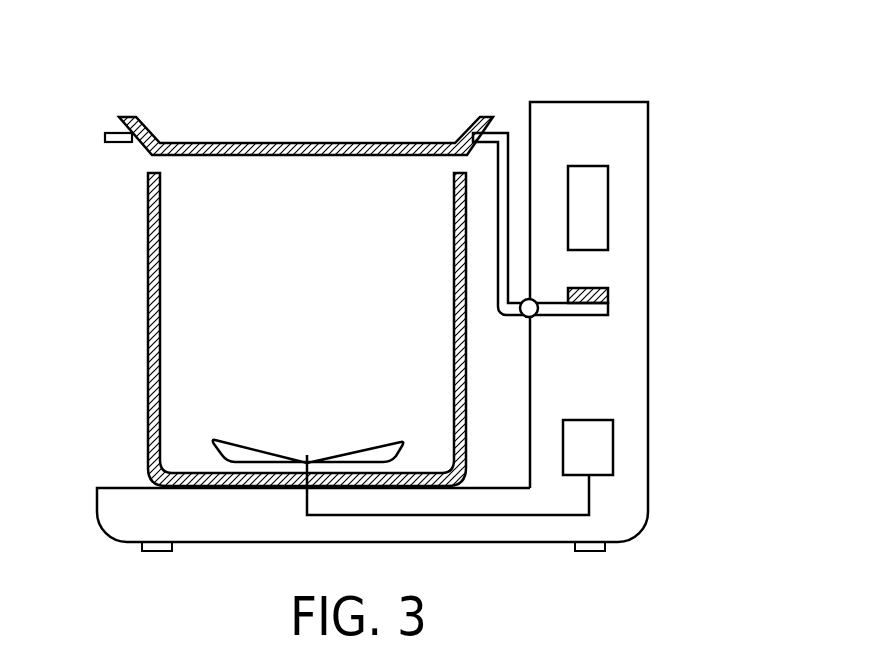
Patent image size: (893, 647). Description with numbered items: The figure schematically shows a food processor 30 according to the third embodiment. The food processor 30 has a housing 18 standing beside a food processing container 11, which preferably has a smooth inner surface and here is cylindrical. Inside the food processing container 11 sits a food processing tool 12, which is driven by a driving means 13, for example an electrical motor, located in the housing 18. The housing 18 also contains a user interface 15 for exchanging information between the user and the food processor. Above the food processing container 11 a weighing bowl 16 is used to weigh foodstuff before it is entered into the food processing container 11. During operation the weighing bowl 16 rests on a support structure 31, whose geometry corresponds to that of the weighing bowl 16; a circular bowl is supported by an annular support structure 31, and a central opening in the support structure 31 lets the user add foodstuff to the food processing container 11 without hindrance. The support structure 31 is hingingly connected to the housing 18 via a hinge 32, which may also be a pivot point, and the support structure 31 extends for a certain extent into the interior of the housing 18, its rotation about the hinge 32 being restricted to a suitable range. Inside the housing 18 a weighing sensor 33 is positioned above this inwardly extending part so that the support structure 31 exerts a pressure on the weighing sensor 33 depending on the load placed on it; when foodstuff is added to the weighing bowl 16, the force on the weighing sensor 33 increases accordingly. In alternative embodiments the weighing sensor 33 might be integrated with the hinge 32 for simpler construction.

The food processor 30 is at (704, 82).
The food processing container 11 is at (148, 305).
The food processing tool 12 is at (370, 456).
The driving means 13 is at (600, 447).
The user interface 15 is at (597, 206).
The weighing bowl 16 is at (305, 143).
The housing 18 is at (626, 350).
The support structure 31 is at (104, 136).
The hinge 32 is at (527, 318).
The weighing sensor 33 is at (607, 295).